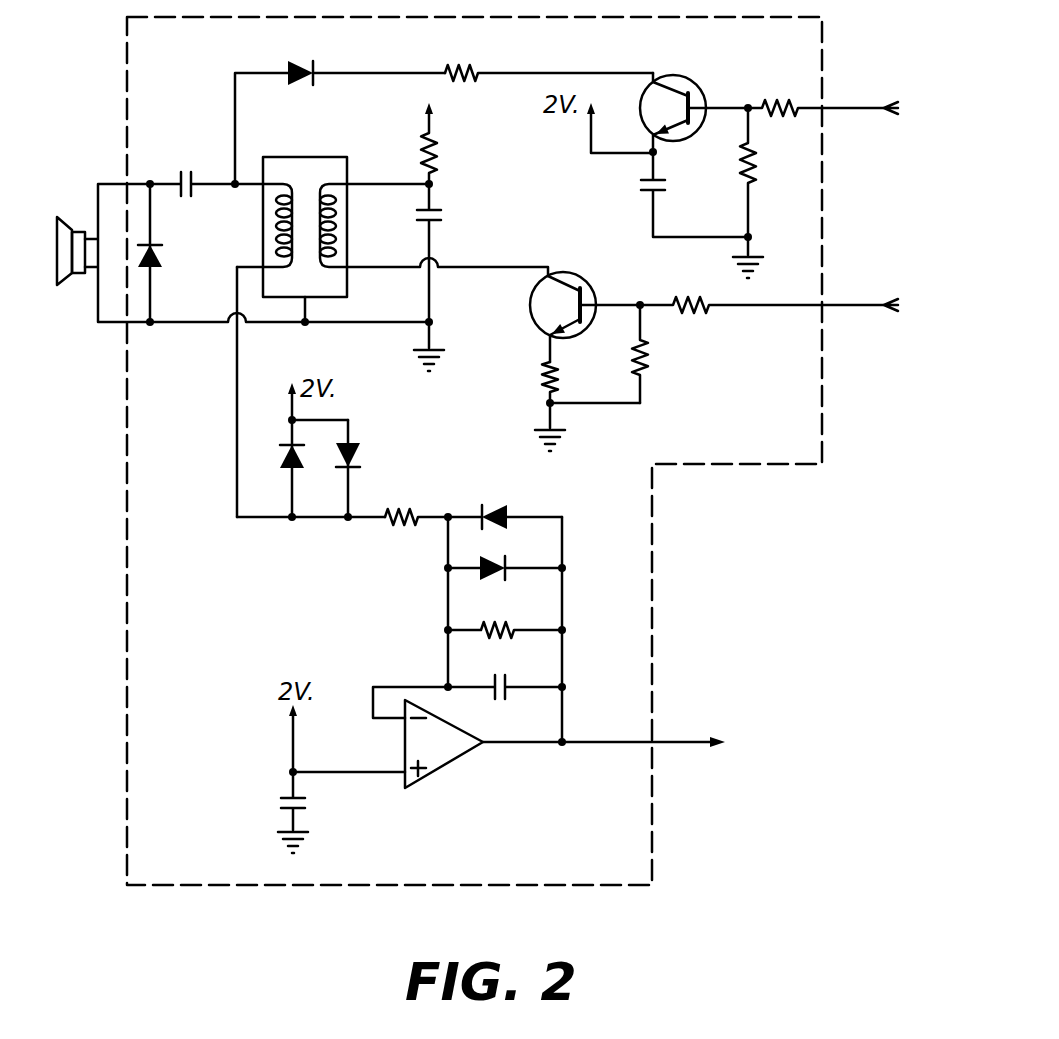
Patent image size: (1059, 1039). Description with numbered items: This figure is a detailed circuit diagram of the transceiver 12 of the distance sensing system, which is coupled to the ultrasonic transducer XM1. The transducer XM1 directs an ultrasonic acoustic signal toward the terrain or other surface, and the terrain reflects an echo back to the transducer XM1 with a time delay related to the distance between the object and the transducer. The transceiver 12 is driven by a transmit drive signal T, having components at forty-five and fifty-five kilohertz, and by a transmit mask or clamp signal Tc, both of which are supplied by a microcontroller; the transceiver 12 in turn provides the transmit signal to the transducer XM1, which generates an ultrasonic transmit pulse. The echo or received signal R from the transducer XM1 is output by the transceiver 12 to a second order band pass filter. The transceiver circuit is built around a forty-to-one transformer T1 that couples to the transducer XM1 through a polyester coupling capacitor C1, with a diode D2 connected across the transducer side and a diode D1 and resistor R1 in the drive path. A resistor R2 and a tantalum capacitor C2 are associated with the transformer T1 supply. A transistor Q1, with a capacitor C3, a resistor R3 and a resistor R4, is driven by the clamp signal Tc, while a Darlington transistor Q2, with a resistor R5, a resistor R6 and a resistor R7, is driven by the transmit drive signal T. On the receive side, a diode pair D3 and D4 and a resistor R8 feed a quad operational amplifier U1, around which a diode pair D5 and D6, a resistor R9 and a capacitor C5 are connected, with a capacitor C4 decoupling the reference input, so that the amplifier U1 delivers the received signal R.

The transceiver 12 is at (653, 566).
The ultrasonic transducer XM1 is at (89, 253).
The capacitor C1 is at (192, 169).
The diode D2 is at (170, 253).
The diode D1 is at (340, 109).
The resistor R1 is at (549, 57).
The transformer T1 is at (391, 224).
The resistor R2 is at (433, 137).
The capacitor C2 is at (447, 253).
The transistor Q1 is at (694, 104).
The capacitor C3 is at (694, 194).
The resistor R3 is at (816, 92).
The transmit mask or clamp signal Tc is at (847, 107).
The resistor R4 is at (765, 193).
The Darlington transistor Q2 is at (585, 306).
The resistor R6 is at (587, 406).
The resistor R7 is at (659, 354).
The resistor R5 is at (762, 289).
The transmit drive signal T is at (843, 308).
The diode D3 is at (273, 468).
The diode D4 is at (368, 468).
The resistor R8 is at (416, 502).
The diode D5 is at (505, 508).
The diode D6 is at (505, 561).
The resistor R9 is at (505, 616).
The capacitor C5 is at (505, 673).
The quad operational amplifier U1 is at (427, 740).
The received signal R is at (663, 738).
The capacitor C4 is at (311, 812).